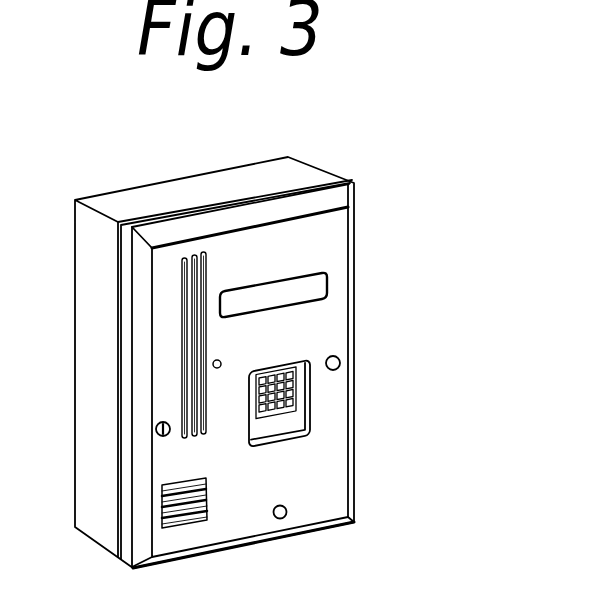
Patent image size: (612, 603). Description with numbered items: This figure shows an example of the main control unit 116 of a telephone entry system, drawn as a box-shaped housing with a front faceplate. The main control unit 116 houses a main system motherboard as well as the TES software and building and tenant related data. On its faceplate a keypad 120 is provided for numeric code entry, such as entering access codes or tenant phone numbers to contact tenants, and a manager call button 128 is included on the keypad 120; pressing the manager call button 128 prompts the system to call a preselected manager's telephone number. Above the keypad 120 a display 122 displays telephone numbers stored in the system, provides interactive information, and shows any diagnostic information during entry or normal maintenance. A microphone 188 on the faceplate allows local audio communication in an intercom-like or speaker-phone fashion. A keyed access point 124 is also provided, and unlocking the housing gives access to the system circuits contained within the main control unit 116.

The main control unit 116 is at (356, 223).
The display 122 is at (318, 283).
The microphone 188 is at (340, 366).
The keypad 120 is at (293, 398).
The manager call button 128 is at (288, 412).
The keyed access point 124 is at (165, 436).